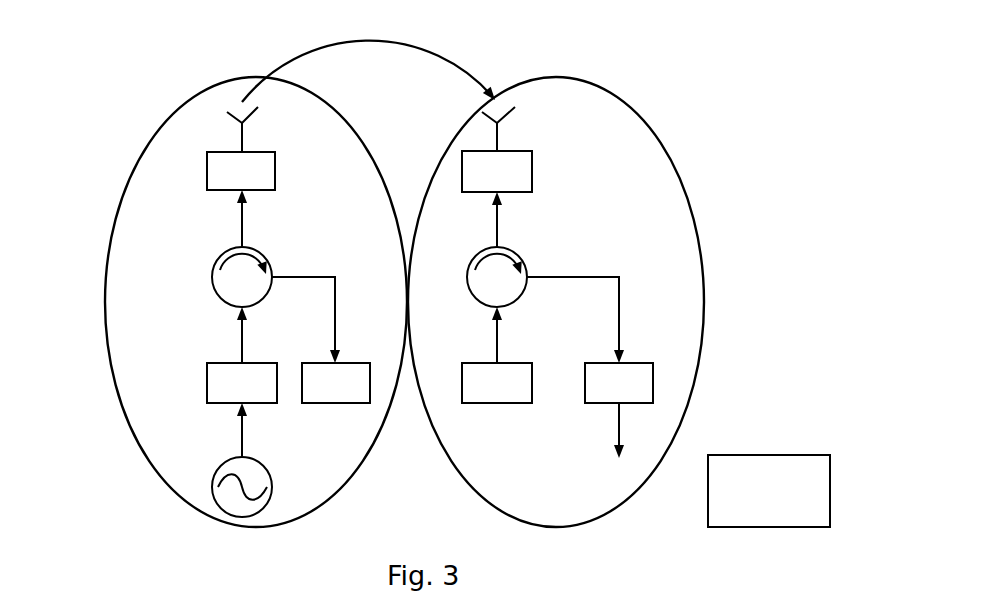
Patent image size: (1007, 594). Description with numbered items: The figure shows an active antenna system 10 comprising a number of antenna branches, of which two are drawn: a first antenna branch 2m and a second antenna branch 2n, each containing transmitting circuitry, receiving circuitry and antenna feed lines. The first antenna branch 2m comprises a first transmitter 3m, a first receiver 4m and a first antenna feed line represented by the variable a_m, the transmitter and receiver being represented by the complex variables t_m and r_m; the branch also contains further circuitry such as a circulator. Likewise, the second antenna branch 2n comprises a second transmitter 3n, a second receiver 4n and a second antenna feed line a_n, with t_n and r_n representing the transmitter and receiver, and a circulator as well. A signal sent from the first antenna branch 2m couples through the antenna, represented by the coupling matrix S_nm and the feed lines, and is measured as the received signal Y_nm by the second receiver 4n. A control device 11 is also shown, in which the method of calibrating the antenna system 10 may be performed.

The antenna system 10 is at (673, 78).
The first antenna branch 2m is at (170, 134).
The second antenna branch 2n is at (670, 203).
The first transmitter 3m is at (223, 382).
The first receiver 4m is at (338, 403).
The second transmitter 3n is at (510, 403).
The second receiver 4n is at (653, 393).
The control device 11 is at (772, 455).